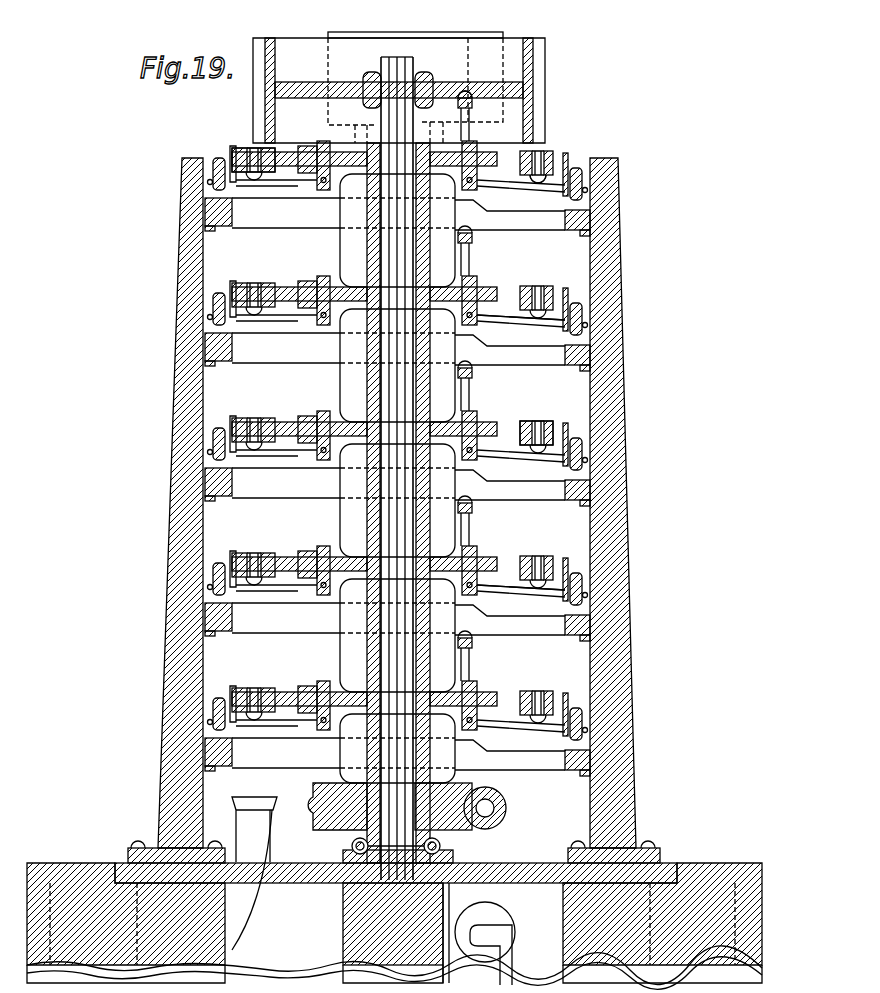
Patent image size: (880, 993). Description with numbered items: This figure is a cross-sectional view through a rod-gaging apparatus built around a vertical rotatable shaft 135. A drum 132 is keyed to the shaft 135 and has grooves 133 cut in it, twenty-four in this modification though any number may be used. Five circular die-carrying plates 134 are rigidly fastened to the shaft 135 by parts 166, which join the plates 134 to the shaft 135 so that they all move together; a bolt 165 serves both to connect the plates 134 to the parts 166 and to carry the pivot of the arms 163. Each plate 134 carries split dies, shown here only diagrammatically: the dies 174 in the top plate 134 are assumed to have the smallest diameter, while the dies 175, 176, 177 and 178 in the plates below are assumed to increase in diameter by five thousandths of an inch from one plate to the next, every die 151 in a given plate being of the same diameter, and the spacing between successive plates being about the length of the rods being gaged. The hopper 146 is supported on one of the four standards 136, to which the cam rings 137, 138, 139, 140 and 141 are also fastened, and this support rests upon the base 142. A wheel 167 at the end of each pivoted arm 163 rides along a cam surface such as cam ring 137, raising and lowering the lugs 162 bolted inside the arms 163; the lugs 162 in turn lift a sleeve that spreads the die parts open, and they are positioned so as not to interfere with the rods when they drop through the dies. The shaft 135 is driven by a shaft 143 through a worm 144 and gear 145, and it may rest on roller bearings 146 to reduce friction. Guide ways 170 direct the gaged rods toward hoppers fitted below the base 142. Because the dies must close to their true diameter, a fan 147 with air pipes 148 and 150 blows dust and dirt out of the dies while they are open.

The drum 132 is at (530, 115).
The grooves 133 is at (540, 78).
The plates 134 is at (497, 160).
The rotatable shaft 135 is at (410, 56).
The standards 136 is at (165, 734).
The cam ring 137 is at (232, 216).
The cam ring 138 is at (235, 353).
The cam ring 139 is at (232, 488).
The cam ring 140 is at (225, 620).
The cam ring 141 is at (228, 757).
The base 142 is at (127, 865).
The driving shaft 143 is at (498, 800).
The worm 144 is at (490, 828).
The gear 145 is at (352, 846).
The hopper / roller bearings 146 is at (360, 36).
The fan 147 is at (505, 925).
The air pipe 148 is at (472, 660).
The air pipe 150 is at (472, 252).
The die 151 is at (530, 425).
The lugs 162 is at (537, 182).
The arms 163 is at (287, 185).
The bolt 165 is at (472, 418).
The parts 166 is at (367, 383).
The wheel 167 is at (213, 300).
The guide ways 170 is at (268, 818).
The split dies 174 is at (240, 150).
The split dies 175 is at (570, 297).
The split dies 176 is at (500, 430).
The split dies 177 is at (500, 563).
The split dies 178 is at (500, 698).